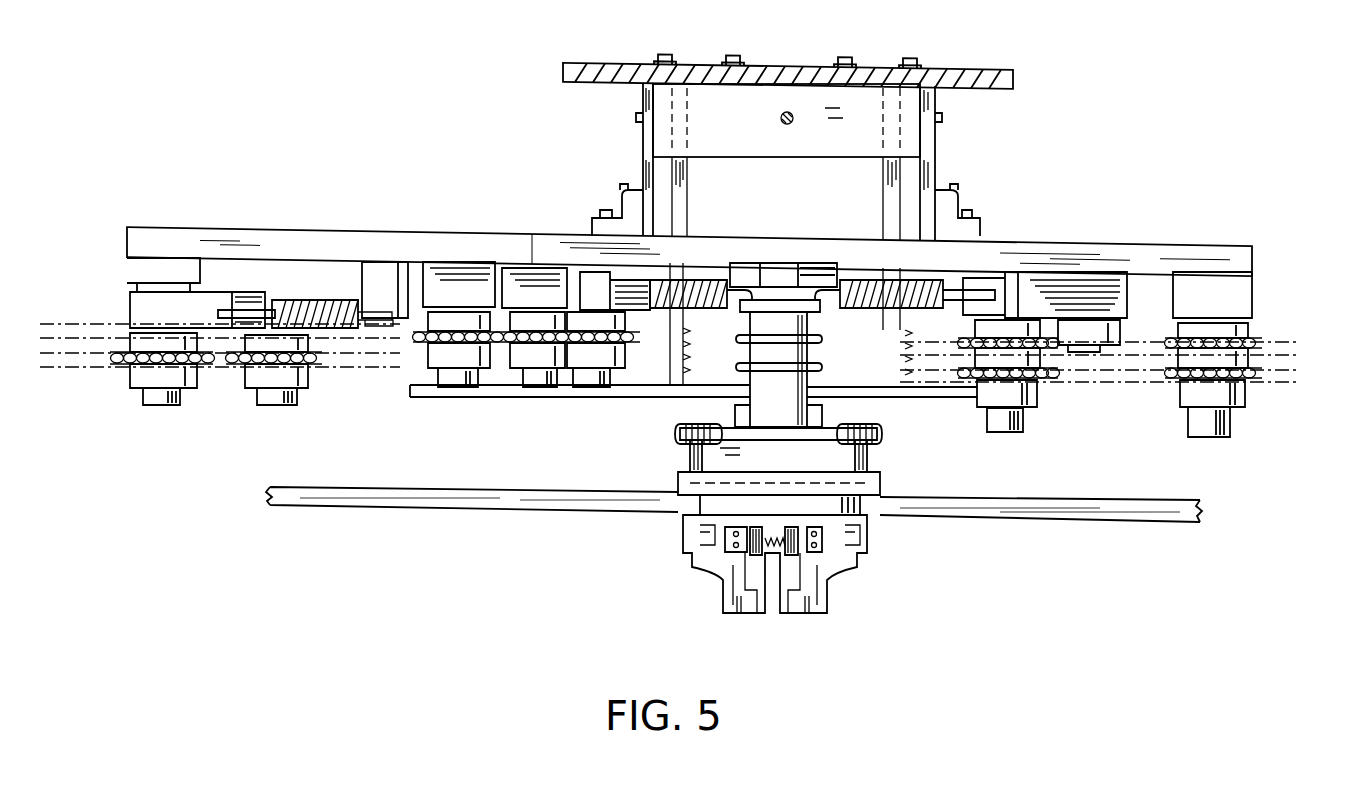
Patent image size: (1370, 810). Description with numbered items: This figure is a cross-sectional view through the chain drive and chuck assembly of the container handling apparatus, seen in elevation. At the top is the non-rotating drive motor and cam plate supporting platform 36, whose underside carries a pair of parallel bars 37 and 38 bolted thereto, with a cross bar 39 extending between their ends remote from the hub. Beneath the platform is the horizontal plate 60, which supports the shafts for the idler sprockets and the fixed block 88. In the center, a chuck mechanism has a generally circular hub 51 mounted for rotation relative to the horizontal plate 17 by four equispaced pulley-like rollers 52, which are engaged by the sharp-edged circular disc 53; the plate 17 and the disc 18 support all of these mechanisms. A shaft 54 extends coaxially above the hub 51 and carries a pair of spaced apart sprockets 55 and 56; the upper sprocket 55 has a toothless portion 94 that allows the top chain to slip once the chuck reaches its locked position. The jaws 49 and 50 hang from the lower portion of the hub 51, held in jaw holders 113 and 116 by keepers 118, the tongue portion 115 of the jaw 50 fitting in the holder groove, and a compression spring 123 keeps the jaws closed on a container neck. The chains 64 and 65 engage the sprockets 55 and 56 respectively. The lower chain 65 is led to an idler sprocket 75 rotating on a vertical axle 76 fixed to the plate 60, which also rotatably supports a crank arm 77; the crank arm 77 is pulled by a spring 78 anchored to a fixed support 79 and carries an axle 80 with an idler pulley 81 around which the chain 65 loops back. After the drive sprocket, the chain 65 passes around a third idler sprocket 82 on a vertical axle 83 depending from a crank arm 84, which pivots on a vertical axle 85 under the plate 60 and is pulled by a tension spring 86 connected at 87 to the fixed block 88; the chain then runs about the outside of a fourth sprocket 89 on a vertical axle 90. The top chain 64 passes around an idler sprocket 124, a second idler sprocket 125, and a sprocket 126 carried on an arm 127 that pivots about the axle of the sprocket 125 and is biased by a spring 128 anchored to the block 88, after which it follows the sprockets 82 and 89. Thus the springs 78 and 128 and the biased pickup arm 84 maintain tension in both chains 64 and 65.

The horizontal plate 17 is at (880, 484).
The disc 18 is at (990, 508).
The drive motor and cam plate supporting platform 36 is at (978, 48).
The parallel bar 37 is at (648, 132).
The parallel bar 38 is at (925, 137).
The cross bar 39 is at (783, 97).
The jaw 49 is at (745, 602).
The jaw 50 is at (812, 602).
The hub 51 is at (685, 527).
The pulley-like rollers 52 is at (680, 434).
The circular plate or disc 53 is at (690, 450).
The shaft 54 is at (790, 404).
The sprocket 55 is at (818, 339).
The sprocket 56 is at (818, 367).
The horizontal plate 60 is at (1078, 256).
The chain 64 is at (50, 322).
The chain 65 is at (112, 372).
The idler sprocket 75 is at (160, 395).
The vertical axle 76 is at (175, 400).
The crank arm 77 is at (205, 312).
The spring 78 is at (310, 312).
The fixed support 79 is at (385, 276).
The axle 80 is at (272, 400).
The idler pulley 81 is at (265, 390).
The idler sprocket 82 is at (1040, 380).
The vertical axle 83 is at (1000, 422).
The crank arm 84 is at (1040, 292).
The vertical axle 85 is at (1090, 352).
The tension spring 86 is at (850, 285).
The connection point 87 is at (808, 278).
The fixed block 88 is at (768, 280).
The fourth sprocket 89 is at (1190, 382).
The vertical axle 90 is at (1197, 427).
The toothless portion 94 is at (750, 333).
The jaw holder 113 is at (830, 537).
The tongue portion 115 is at (845, 557).
The jaw holder 116 is at (725, 542).
The keepers 118 is at (735, 552).
The compression spring 123 is at (773, 552).
The idler sprocket 124 is at (452, 322).
The second idler sprocket 125 is at (525, 322).
The sprocket 126 is at (600, 318).
The arm 127 is at (597, 320).
The spring 128 is at (708, 280).